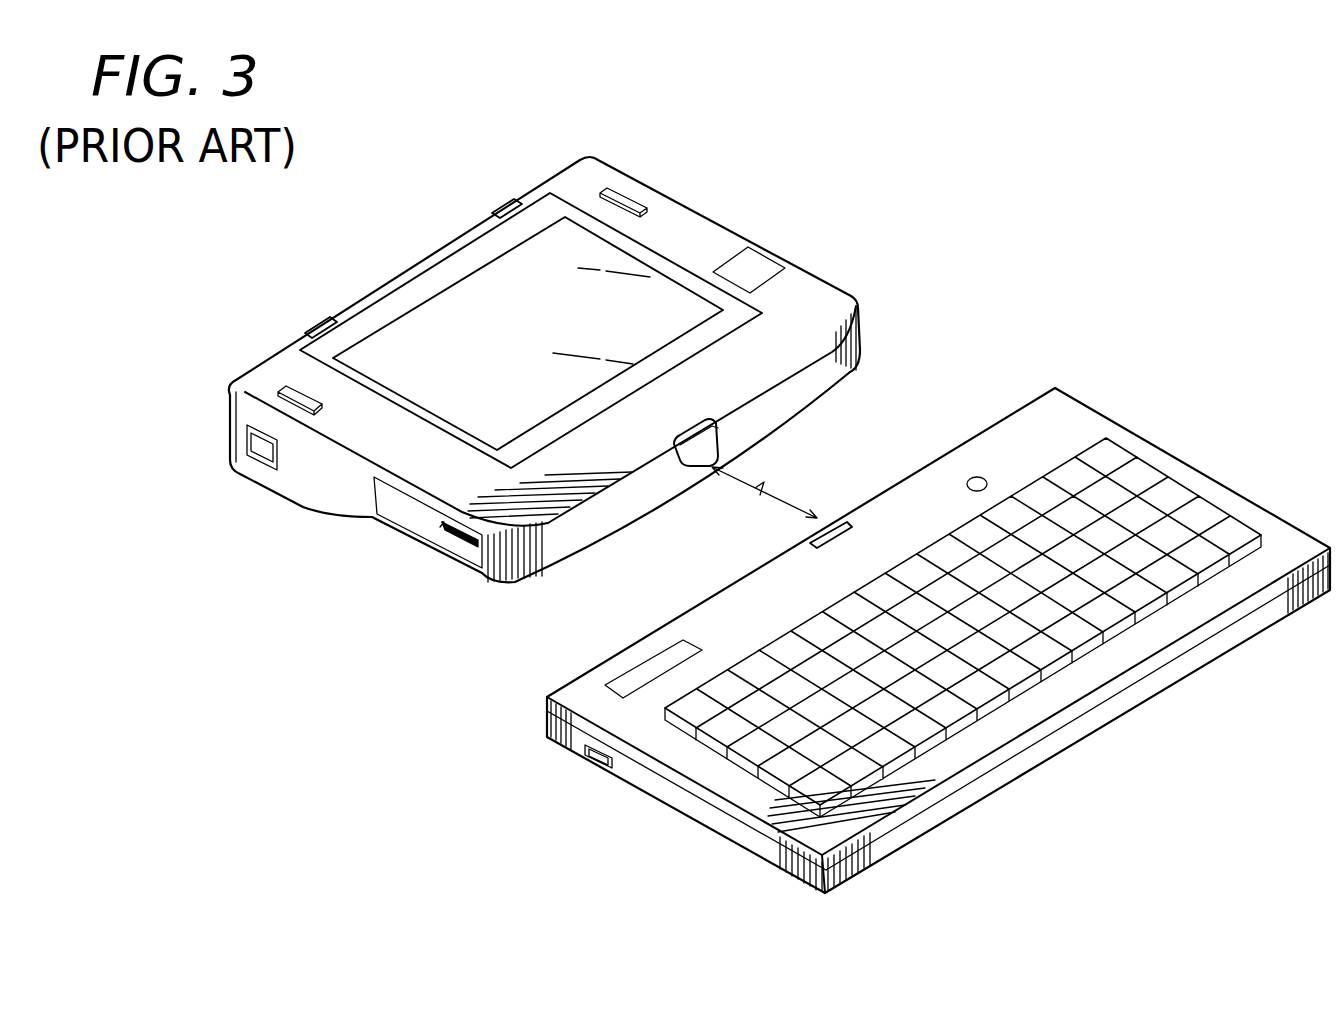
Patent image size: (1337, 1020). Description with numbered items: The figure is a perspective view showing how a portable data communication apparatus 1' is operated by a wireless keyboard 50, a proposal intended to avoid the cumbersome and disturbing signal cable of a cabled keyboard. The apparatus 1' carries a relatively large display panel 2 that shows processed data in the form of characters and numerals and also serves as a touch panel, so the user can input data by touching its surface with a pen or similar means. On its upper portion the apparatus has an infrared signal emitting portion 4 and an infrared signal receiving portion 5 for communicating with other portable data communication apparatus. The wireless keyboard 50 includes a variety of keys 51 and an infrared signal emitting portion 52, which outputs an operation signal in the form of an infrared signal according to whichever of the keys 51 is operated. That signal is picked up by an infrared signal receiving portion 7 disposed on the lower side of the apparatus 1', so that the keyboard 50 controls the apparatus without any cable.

The portable data communication apparatus 1' is at (562, 369).
The display panel 2 is at (633, 252).
The infrared signal emitting portion 4 is at (505, 206).
The infrared signal receiving portion 5 is at (327, 318).
The infrared signal receiving portion 7 is at (707, 443).
The wireless keyboard 50 is at (1147, 440).
The keys 51 is at (1107, 613).
The infrared signal emitting portion 52 is at (817, 535).